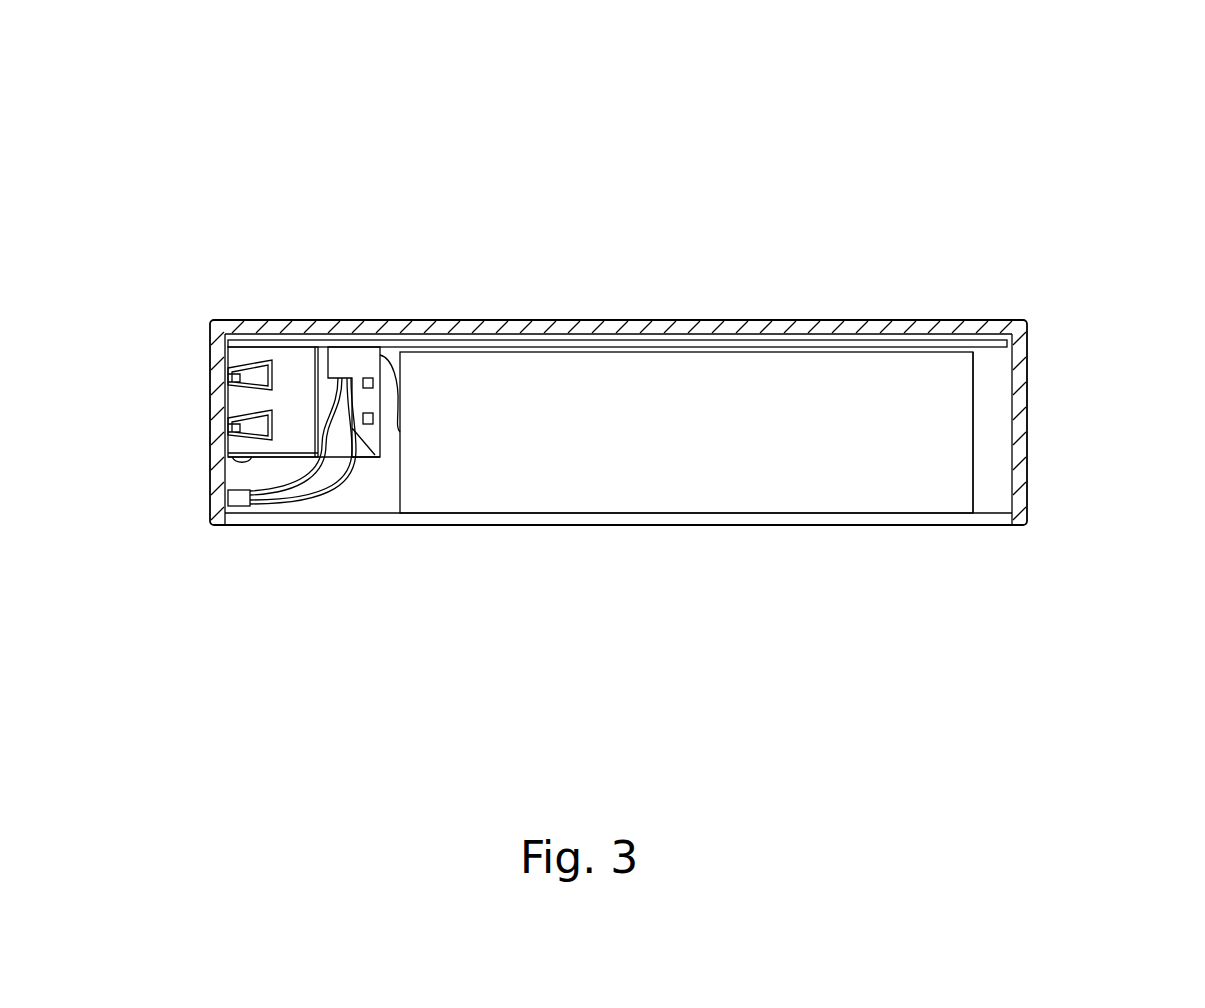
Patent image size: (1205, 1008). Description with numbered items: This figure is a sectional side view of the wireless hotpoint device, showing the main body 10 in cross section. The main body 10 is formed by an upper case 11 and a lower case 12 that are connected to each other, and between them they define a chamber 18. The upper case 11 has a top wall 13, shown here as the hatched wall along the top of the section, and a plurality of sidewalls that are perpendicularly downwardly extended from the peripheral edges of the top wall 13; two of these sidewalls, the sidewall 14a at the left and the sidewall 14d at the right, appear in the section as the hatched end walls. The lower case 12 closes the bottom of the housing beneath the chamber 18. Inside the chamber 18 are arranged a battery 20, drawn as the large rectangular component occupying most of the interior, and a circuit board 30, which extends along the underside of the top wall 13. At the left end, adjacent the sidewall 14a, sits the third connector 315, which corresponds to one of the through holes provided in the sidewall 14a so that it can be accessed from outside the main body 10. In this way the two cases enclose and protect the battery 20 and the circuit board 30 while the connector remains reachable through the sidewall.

The main body 10 is at (1182, 76).
The upper case 11 is at (1072, 310).
The lower case 12 is at (506, 517).
The top wall 13 is at (692, 320).
The sidewall 14a is at (209, 456).
The sidewall 14d is at (1027, 450).
The chamber 18 is at (992, 460).
The battery 20 is at (793, 458).
The circuit board 30 is at (766, 345).
The third connector 315 is at (238, 397).